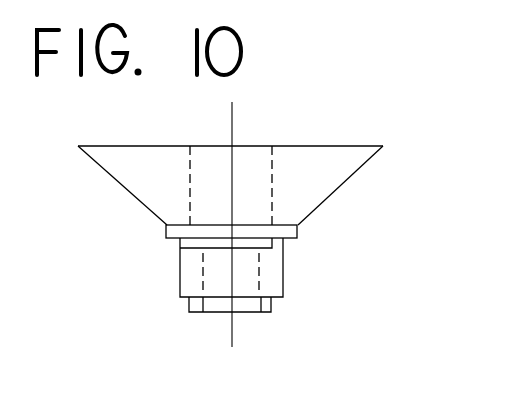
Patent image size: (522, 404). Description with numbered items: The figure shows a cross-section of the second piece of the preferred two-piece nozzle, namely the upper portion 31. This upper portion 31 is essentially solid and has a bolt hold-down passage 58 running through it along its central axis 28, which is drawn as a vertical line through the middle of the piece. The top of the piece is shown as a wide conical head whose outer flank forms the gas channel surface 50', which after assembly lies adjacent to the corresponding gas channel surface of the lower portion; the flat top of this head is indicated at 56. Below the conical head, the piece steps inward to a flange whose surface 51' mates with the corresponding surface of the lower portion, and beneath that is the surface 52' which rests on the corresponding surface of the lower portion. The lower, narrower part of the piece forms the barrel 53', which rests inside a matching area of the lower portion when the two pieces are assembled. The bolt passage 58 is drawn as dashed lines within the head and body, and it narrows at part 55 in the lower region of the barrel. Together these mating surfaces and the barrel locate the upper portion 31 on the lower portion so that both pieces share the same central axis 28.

The central axis 28 is at (232, 130).
The top surface of conical head 56 is at (336, 146).
The upper portion 31 is at (358, 171).
The gas channel surface 50' is at (121, 185).
The bolt hold-down passage 58 is at (260, 185).
The surface 51' is at (195, 247).
The surface 52' is at (192, 277).
The barrel 53' is at (213, 295).
The narrowed part 55 is at (238, 265).